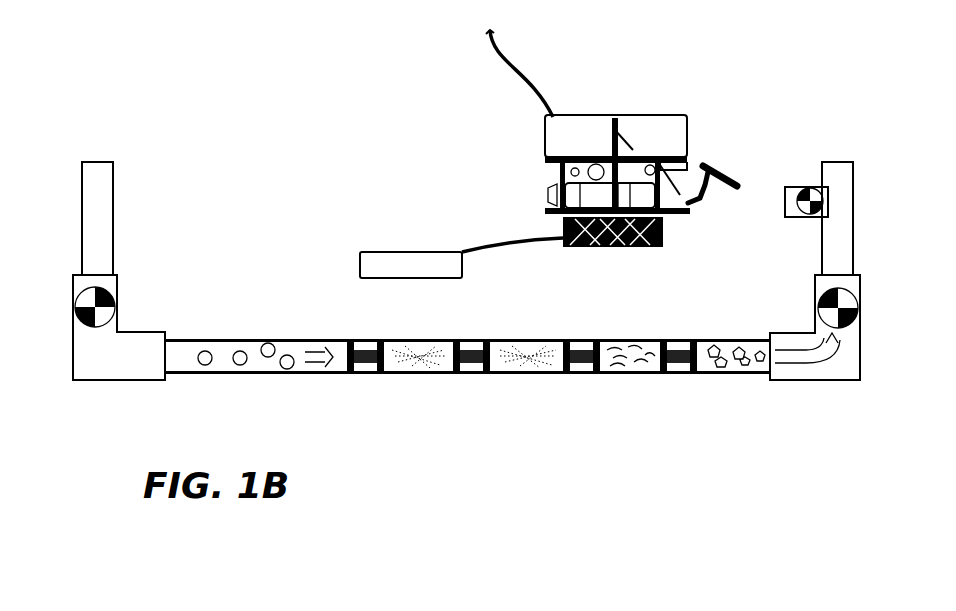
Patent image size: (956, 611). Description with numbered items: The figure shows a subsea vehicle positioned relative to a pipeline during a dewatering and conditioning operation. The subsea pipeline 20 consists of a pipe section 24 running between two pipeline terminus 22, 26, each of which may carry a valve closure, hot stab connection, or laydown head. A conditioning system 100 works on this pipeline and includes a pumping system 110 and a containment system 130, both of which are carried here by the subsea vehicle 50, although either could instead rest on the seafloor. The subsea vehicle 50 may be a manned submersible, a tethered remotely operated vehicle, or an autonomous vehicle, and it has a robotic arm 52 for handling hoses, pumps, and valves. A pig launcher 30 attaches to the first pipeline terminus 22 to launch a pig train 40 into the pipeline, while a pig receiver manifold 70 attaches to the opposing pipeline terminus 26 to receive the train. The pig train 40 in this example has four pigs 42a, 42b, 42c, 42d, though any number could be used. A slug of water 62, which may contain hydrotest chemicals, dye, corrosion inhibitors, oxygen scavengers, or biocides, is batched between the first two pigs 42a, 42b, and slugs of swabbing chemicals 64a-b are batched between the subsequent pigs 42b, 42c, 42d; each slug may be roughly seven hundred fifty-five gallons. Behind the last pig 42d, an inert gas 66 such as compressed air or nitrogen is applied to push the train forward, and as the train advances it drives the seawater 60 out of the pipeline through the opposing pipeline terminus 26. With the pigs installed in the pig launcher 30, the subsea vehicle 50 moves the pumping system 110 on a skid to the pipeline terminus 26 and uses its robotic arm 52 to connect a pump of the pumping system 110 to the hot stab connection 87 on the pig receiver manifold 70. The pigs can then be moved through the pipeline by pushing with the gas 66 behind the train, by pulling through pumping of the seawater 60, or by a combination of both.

The conditioning system 100 is at (253, 84).
The subsea pipeline 20 is at (242, 214).
The pig launcher 30 is at (98, 162).
The pipeline terminus 22 is at (93, 380).
The pipe section 24 is at (185, 373).
The pipeline terminus 26 is at (830, 380).
The pig receiver manifold 70 is at (822, 250).
The hot stab connection 87 is at (795, 187).
The inert gas 66 is at (205, 350).
The slugs of swabbing chemicals 64a-b is at (535, 347).
The slug of water 62 is at (647, 342).
The seawater 60 is at (748, 342).
The pig train 40 is at (710, 455).
The pig 42a is at (667, 374).
The pig 42b is at (572, 374).
The pig 42c is at (457, 374).
The pig 42d is at (350, 374).
The containment system 130 is at (392, 252).
The subsea vehicle 50 is at (658, 130).
The robotic arm 52 is at (740, 172).
The pumping system 110 is at (623, 247).